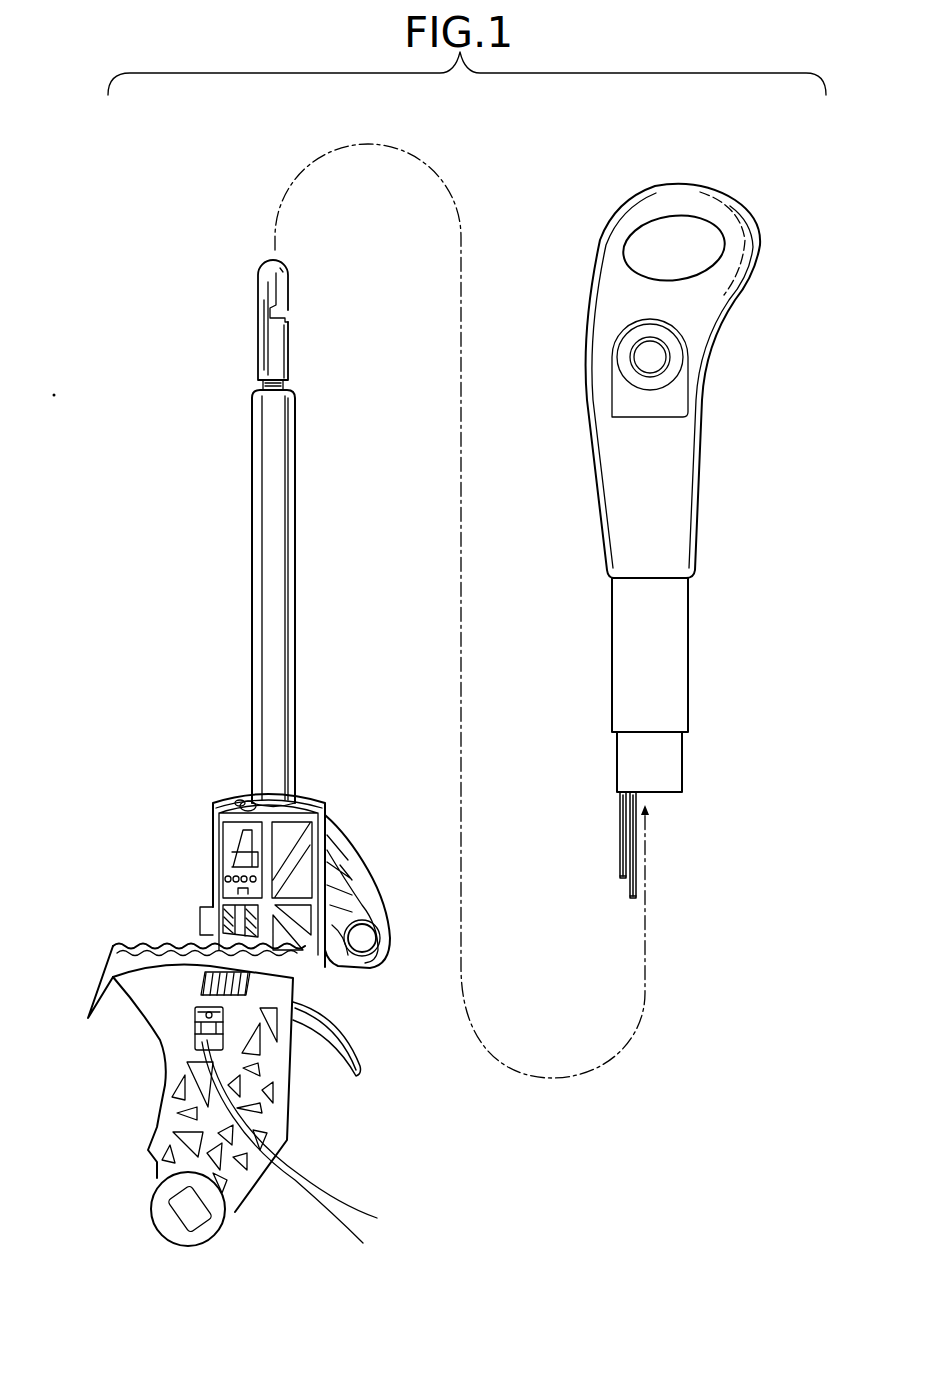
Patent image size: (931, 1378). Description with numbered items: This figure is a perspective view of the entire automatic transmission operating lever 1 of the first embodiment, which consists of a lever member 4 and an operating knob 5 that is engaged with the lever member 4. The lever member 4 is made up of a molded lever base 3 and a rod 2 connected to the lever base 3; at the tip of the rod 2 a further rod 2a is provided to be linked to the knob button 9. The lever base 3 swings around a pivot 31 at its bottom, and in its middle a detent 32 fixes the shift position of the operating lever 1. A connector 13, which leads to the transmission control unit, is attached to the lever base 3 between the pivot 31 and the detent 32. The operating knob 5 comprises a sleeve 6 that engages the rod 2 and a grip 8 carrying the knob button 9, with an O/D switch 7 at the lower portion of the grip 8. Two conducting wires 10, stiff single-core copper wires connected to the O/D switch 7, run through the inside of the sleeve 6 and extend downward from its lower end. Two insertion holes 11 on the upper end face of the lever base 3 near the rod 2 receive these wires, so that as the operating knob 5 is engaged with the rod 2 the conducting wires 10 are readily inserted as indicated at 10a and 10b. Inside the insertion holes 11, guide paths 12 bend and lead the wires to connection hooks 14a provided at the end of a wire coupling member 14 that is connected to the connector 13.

The automatic transmission operating lever 1 is at (197, 243).
The rod 2 is at (296, 525).
The rod 2a is at (291, 337).
The lever base 3 is at (290, 1105).
The lever member 4 is at (197, 550).
The operating knob 5 is at (597, 240).
The sleeve 6 is at (690, 650).
The O/D (overdrive) switch 7 is at (654, 358).
The grip 8 is at (750, 225).
The knob button 9 is at (712, 260).
The conducting wires 10 is at (618, 848).
The conducting wire insertion 10a is at (632, 900).
The conducting wire insertion 10b is at (622, 880).
The insertion holes 11 is at (225, 795).
The guide paths 12 is at (243, 842).
The connector 13 is at (187, 1025).
The wire coupling member 14 is at (205, 980).
The connection hooks 14a is at (222, 878).
The pivot 31 is at (148, 1213).
The detent 32 is at (150, 955).